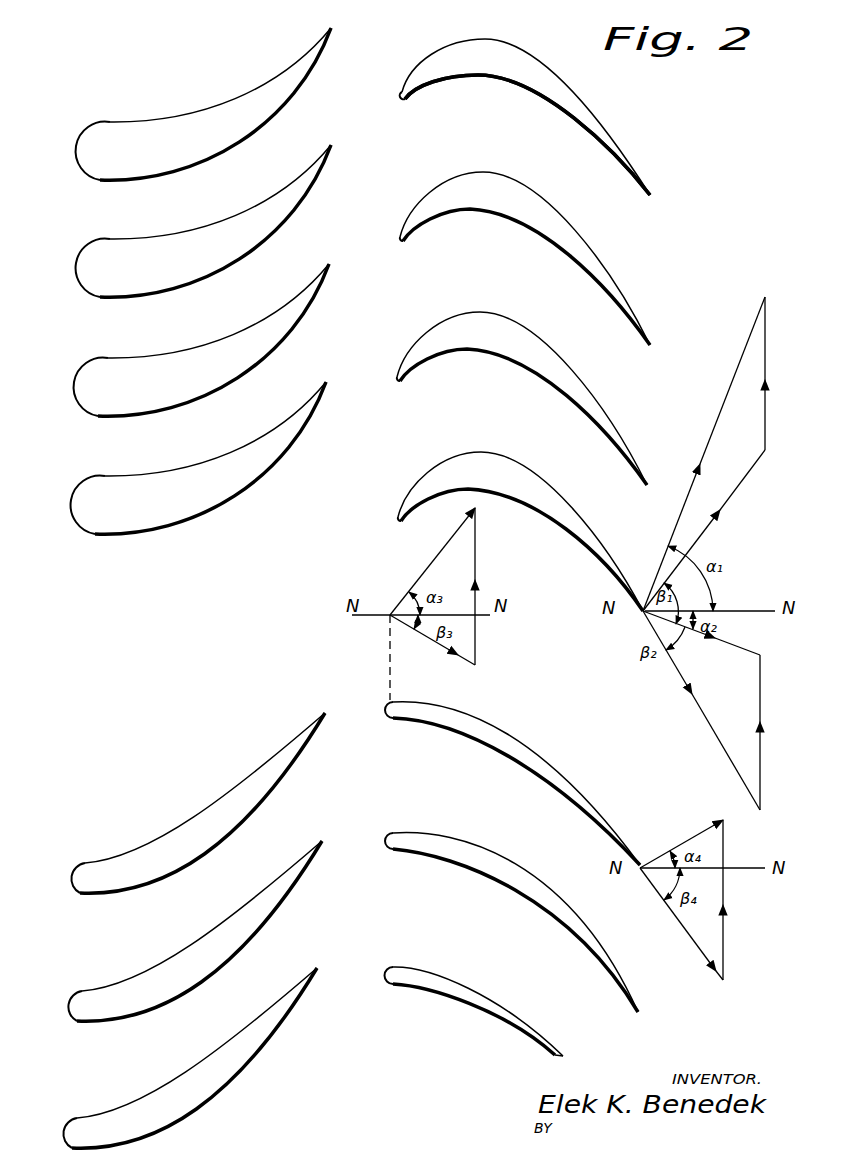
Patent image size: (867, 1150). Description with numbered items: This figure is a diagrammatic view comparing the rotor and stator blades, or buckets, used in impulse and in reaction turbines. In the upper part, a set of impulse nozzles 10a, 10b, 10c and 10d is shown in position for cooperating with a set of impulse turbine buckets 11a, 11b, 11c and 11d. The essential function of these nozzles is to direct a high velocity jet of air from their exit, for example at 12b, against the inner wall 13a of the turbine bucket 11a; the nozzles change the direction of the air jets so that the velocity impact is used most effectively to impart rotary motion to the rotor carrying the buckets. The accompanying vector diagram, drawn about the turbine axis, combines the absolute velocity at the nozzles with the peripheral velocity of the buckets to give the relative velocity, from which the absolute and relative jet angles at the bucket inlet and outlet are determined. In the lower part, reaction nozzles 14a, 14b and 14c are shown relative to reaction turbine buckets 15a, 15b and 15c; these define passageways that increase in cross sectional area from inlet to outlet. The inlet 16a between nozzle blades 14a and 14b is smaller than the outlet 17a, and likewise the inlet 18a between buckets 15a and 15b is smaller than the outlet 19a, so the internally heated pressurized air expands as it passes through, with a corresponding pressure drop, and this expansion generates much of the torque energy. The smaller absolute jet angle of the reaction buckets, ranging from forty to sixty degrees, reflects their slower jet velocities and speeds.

The impulse nozzle 10a is at (90, 143).
The impulse nozzle 10b is at (90, 262).
The impulse nozzle 10c is at (76, 392).
The impulse nozzle 10d is at (74, 510).
The impulse turbine bucket 11a is at (410, 72).
The impulse turbine bucket 11b is at (398, 218).
The impulse turbine bucket 11c is at (396, 360).
The impulse turbine bucket 11d is at (372, 505).
The nozzle exit 12b is at (318, 215).
The inner wall of turbine bucket 13a is at (503, 78).
The reaction nozzle 14a is at (72, 870).
The reaction nozzle 14b is at (70, 998).
The reaction nozzle 14c is at (66, 1126).
The reaction turbine bucket 15a is at (390, 708).
The reaction turbine bucket 15b is at (390, 843).
The reaction turbine bucket 15c is at (390, 978).
The inlet between nozzle blades 16a is at (118, 938).
The outlet between nozzle blades 17a is at (308, 790).
The inlet between turbine buckets 18a is at (425, 750).
The outlet between turbine buckets 19a is at (634, 930).